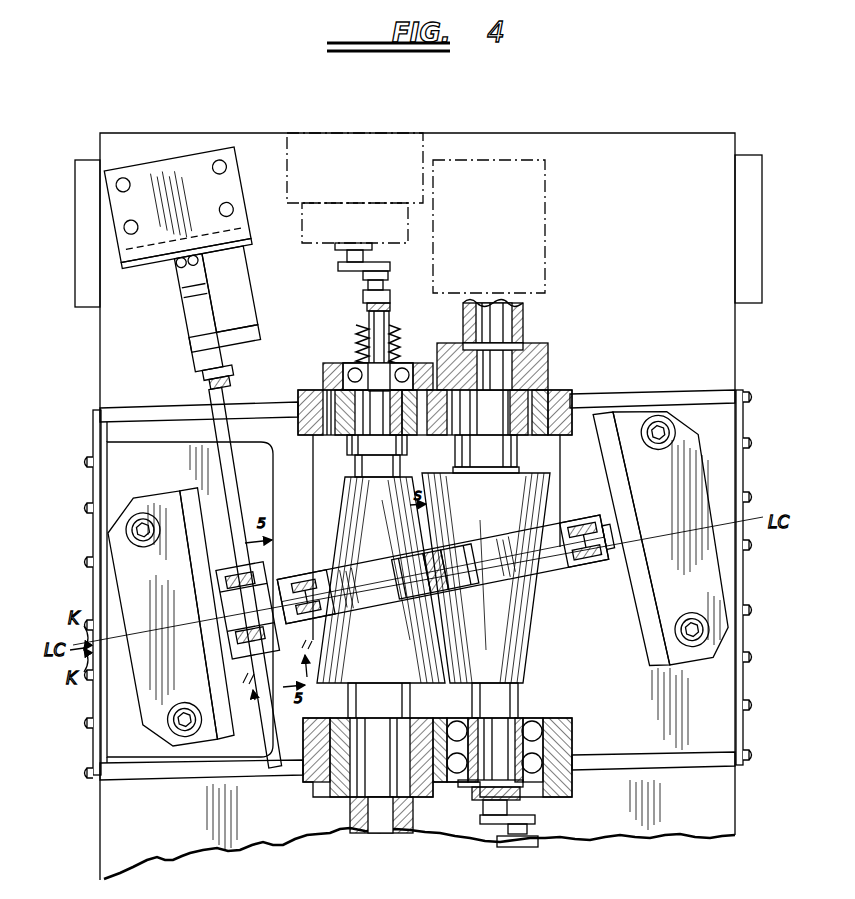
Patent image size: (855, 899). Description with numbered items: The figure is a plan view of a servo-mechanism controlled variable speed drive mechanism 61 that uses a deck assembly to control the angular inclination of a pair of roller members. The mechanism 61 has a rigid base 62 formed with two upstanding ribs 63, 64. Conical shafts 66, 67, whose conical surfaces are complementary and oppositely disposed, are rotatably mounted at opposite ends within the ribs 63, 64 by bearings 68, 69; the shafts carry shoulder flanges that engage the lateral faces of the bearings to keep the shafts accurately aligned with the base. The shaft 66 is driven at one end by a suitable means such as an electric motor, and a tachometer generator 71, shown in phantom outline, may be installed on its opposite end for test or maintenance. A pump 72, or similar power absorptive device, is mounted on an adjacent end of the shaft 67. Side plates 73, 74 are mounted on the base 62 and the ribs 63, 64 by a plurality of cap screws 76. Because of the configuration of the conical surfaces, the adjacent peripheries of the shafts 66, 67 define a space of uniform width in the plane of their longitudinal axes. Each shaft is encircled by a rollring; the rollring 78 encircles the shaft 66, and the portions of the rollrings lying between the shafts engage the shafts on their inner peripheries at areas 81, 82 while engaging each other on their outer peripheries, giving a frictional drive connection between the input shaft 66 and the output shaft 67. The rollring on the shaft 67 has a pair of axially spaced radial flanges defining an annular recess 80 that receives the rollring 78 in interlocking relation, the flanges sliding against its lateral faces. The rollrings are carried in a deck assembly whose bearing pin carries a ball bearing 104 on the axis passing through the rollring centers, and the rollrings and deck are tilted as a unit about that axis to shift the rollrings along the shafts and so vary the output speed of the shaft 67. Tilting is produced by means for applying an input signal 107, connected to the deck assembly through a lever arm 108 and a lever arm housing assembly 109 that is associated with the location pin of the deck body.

The servo-mechanism controlled variable speed drive mechanism 61 is at (660, 116).
The rigid base 62 is at (726, 137).
The upstanding rib 63 is at (570, 392).
The upstanding rib 64 is at (578, 778).
The conical shaft 66 is at (360, 466).
The conical shaft 67 is at (450, 478).
The bearings 68 is at (356, 443).
The bearings 69 is at (521, 722).
The tachometer generator 71 is at (356, 96).
The pump 72 is at (549, 214).
The side plate 73 is at (94, 442).
The side plate 74 is at (744, 481).
The cap screws 76 is at (88, 466).
The rollring 78 is at (446, 569).
The annular recess 80 is at (471, 568).
The engagement area 81 is at (403, 575).
The engagement area 82 is at (460, 567).
The ball bearing 104 is at (626, 528).
The means for applying an input signal 107 is at (178, 338).
The lever arm 108 is at (219, 455).
The lever arm housing assembly 109 is at (240, 638).